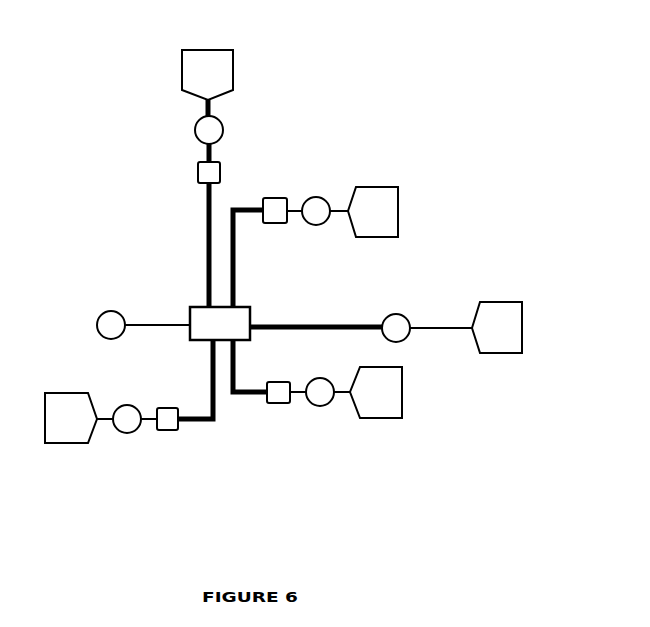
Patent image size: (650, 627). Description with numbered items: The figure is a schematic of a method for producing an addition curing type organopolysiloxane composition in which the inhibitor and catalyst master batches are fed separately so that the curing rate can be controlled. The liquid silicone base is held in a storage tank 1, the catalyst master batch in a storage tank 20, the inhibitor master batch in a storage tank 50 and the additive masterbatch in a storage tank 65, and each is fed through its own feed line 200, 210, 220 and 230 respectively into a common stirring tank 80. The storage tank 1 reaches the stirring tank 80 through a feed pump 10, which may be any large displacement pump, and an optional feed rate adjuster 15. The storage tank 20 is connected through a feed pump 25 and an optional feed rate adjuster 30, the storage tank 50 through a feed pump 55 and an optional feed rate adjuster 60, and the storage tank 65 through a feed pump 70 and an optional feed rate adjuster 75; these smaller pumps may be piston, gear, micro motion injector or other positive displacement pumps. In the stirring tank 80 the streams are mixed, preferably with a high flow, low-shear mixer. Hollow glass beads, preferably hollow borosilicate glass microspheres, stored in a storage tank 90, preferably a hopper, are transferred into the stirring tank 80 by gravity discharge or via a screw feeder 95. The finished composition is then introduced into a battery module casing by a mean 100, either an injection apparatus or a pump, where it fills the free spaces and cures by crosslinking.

The storage tank 1 is at (182, 73).
The feed pump 10 is at (194, 131).
The feed rate adjuster 15 is at (198, 170).
The storage tank 20 is at (381, 182).
The feed pump 25 is at (318, 195).
The feed rate adjuster 30 is at (277, 195).
The storage tank 50 is at (62, 447).
The feed pump 55 is at (127, 434).
The feed rate adjuster 60 is at (170, 434).
The storage tank 65 is at (382, 420).
The feed pump 70 is at (322, 408).
The feed rate adjuster 75 is at (278, 408).
The stirring tank 80 is at (251, 314).
The storage tank 90 is at (466, 313).
The screw feeder 95 is at (396, 313).
The mean 100 is at (111, 310).
The feed line 200 is at (206, 238).
The feed line 210 is at (238, 280).
The feed line 220 is at (200, 424).
The feed line 230 is at (250, 400).